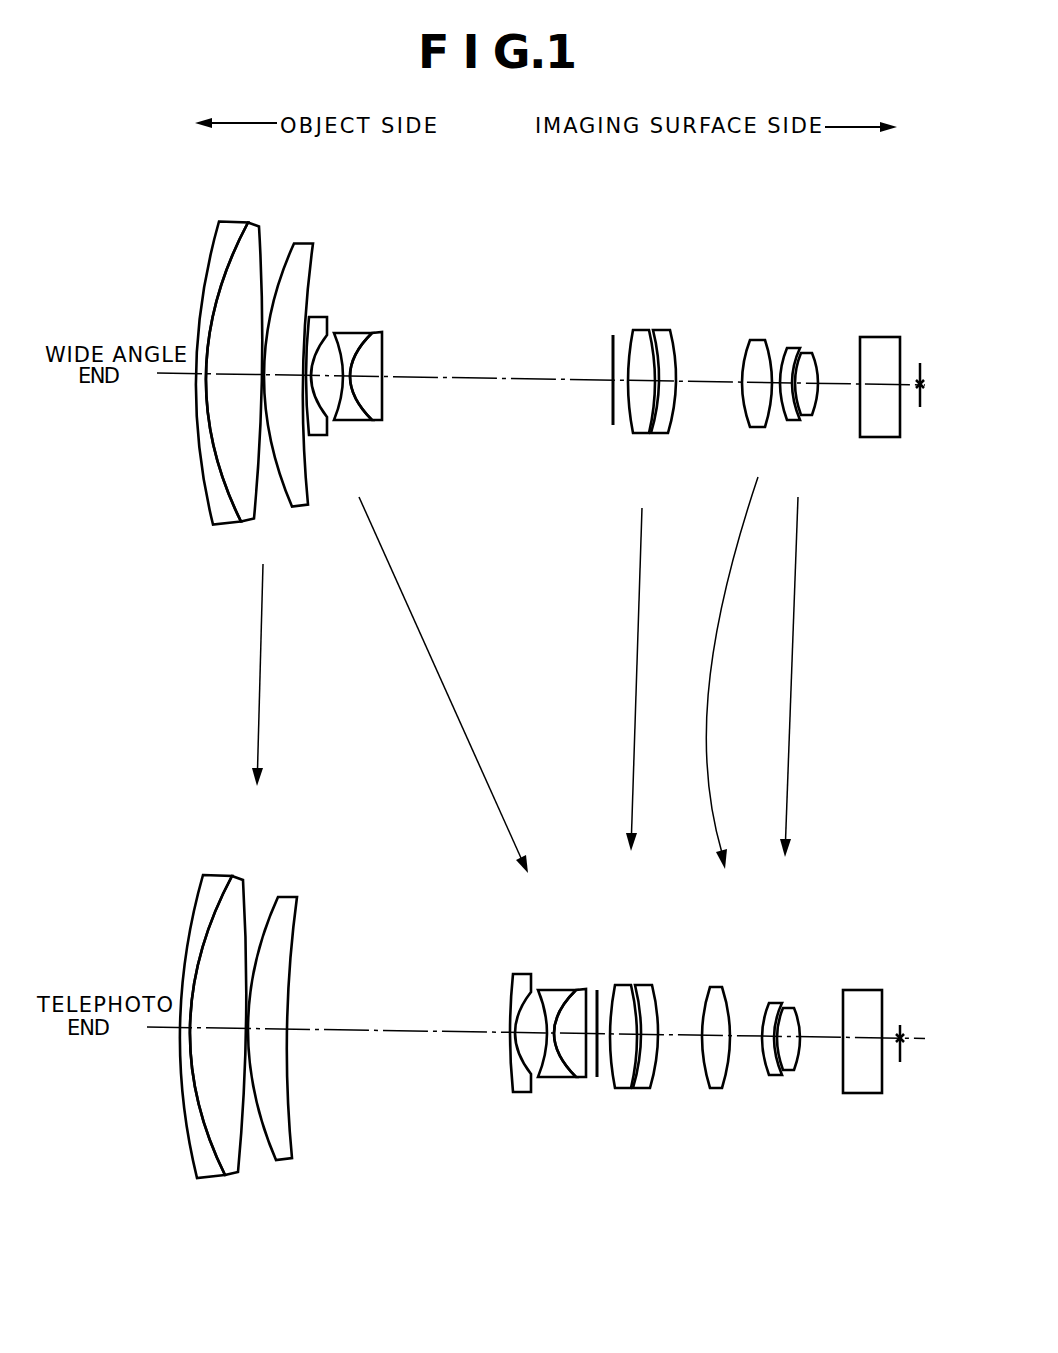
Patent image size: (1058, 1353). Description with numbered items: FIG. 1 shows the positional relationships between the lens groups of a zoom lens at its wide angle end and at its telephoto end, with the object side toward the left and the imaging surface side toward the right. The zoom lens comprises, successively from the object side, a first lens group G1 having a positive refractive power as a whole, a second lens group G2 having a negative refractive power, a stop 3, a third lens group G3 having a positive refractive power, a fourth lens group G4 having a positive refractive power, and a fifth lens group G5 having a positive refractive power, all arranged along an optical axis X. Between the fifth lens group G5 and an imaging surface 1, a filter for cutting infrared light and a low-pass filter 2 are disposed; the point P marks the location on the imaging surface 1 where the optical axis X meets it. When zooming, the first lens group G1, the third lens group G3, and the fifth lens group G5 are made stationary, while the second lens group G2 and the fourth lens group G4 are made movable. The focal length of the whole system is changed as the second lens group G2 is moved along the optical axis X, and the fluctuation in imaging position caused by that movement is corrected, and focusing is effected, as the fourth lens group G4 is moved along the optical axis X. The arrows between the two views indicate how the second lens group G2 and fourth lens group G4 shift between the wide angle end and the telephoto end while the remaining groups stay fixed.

The first lens group G1 is at (202, 219).
The second lens group G2 is at (309, 312).
The third lens group G3 is at (680, 316).
The fourth lens group G4 is at (735, 318).
The fifth lens group G5 is at (780, 337).
The imaging surface 1 is at (919, 362).
The low-pass filter 2 is at (880, 337).
The stop 3 is at (610, 408).
The optical axis X is at (178, 378).
The image point on imaging surface P is at (926, 711).